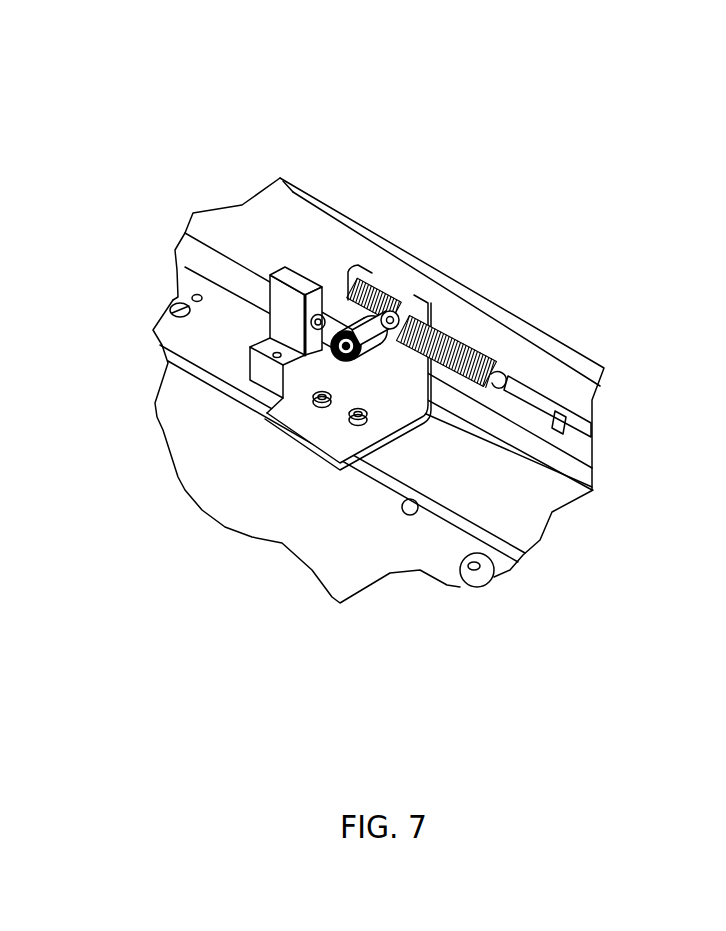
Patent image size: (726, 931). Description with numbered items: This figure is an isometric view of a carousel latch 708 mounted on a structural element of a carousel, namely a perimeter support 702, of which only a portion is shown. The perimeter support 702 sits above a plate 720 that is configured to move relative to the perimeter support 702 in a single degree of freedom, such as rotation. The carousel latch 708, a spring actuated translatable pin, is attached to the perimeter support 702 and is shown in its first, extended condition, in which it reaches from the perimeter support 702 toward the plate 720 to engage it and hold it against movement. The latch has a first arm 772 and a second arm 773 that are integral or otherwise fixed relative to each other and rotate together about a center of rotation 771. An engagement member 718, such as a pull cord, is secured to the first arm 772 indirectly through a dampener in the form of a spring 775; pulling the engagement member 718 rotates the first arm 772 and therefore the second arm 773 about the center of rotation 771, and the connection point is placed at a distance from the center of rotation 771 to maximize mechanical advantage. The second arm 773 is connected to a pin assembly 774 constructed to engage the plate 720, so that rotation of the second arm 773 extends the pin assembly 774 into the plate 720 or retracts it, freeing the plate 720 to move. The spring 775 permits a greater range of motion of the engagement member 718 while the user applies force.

The carousel latch 708 is at (279, 137).
The perimeter support 702 is at (192, 342).
The engagement member 718 is at (550, 402).
The plate 720 is at (333, 543).
The center of rotation 771 is at (339, 368).
The first arm 772 is at (403, 328).
The second arm 773 is at (334, 300).
The pin assembly 774 is at (293, 282).
The spring 775 is at (457, 330).